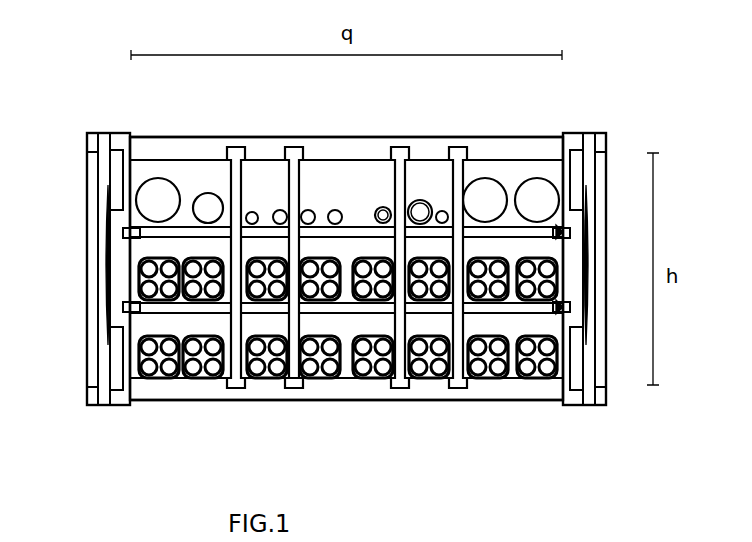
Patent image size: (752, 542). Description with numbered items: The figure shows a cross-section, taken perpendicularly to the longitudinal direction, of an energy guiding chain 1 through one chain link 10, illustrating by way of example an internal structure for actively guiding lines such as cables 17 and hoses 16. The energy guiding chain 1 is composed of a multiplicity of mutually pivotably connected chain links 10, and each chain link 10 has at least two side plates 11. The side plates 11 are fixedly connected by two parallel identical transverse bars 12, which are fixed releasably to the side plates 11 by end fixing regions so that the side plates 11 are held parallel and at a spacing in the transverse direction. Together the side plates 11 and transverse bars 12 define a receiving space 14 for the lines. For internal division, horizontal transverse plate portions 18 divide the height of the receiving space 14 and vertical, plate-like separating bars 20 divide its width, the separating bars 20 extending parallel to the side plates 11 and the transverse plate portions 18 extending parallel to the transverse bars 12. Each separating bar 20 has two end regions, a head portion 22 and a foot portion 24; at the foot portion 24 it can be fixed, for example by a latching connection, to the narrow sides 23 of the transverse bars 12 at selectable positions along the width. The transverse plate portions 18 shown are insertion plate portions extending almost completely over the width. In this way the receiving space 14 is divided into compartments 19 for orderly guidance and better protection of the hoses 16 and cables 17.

The energy guiding chain 1 is at (631, 59).
The chain link 10 is at (87, 122).
The side plate 11 is at (106, 272).
The transverse bar 12 is at (362, 137).
The receiving space 14 is at (328, 179).
The hose 16 is at (485, 192).
The cable 17 is at (488, 282).
The transverse plate portion 18 is at (128, 232).
The compartment 19 is at (190, 187).
The separating bar 20 is at (236, 147).
The head portion 22 is at (460, 137).
The narrow side 23 is at (503, 137).
The foot portion 24 is at (293, 390).